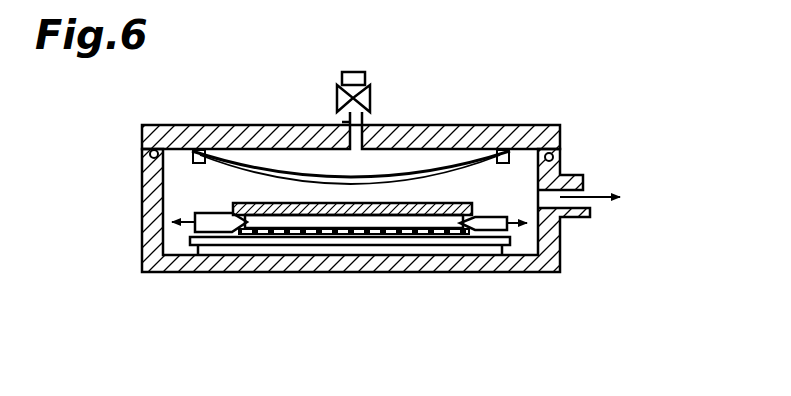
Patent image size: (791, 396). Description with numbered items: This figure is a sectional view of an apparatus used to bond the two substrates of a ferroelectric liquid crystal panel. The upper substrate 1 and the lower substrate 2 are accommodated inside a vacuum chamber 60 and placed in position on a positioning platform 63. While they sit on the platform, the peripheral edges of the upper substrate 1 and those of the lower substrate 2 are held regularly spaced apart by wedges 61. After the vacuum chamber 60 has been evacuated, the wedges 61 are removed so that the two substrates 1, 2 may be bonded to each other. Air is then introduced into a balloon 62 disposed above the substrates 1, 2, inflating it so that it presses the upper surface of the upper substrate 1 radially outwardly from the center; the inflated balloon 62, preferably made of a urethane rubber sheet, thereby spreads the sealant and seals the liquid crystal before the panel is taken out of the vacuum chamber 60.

The upper substrate 1 is at (342, 217).
The lower substrate 2 is at (392, 235).
The vacuum chamber 60 is at (152, 258).
The wedges 61 is at (214, 213).
The balloon 62 is at (462, 150).
The positioning platform 63 is at (448, 237).